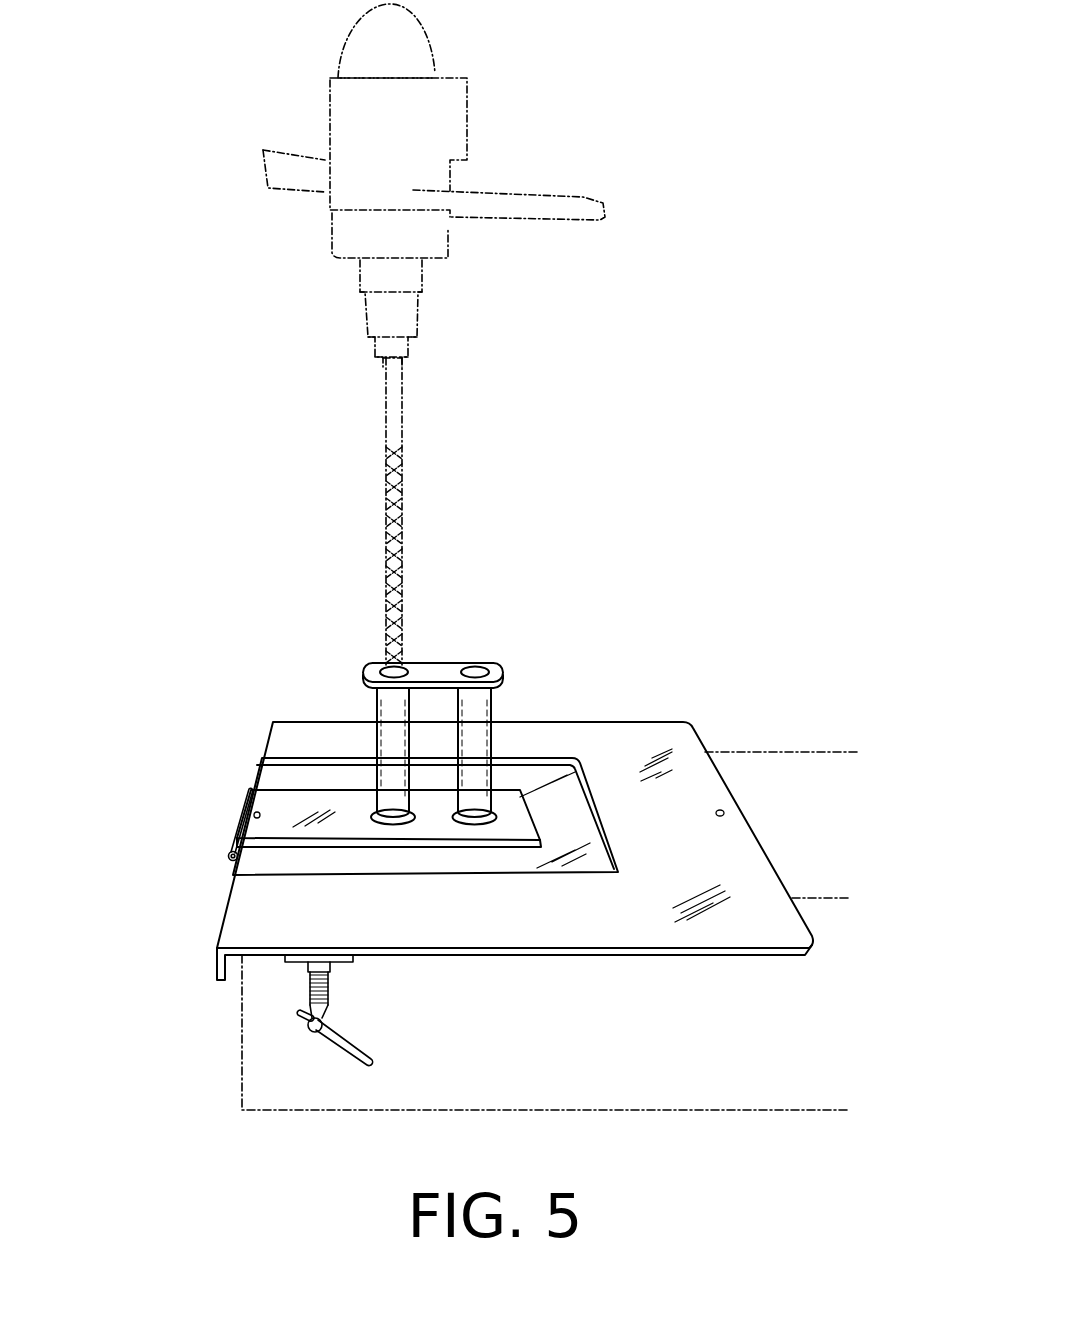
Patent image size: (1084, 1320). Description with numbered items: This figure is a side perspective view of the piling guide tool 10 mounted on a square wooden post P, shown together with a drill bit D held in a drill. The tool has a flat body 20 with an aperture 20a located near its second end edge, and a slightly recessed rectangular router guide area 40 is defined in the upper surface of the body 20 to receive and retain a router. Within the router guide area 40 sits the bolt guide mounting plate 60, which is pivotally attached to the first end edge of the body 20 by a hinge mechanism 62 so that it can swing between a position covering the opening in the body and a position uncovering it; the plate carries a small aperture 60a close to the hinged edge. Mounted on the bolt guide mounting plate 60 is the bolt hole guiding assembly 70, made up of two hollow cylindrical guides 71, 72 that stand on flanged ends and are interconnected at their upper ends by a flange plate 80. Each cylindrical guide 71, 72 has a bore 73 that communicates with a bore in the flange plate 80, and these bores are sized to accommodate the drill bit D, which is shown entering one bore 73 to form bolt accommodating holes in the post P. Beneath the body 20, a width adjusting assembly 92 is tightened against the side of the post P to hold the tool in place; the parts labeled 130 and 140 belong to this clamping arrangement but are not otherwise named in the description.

The piling guide tool 10 is at (602, 643).
The body 20 is at (670, 828).
The aperture 20a is at (728, 813).
The router guide area 40 is at (570, 820).
The bolt guide mounting plate 60 is at (520, 795).
The aperture 60a is at (230, 850).
The hinge mechanism 62 is at (237, 798).
The bolt hole guiding assembly 70 is at (377, 773).
The cylindrical guide 71 is at (485, 720).
The cylindrical guide 72 is at (395, 750).
The bore 73 is at (387, 665).
The flange plate 80 is at (425, 668).
The width adjusting assembly 92 is at (285, 987).
The pin 130 is at (302, 995).
The handle 140 is at (353, 1057).
The drill bit D is at (385, 579).
The post P is at (430, 1072).